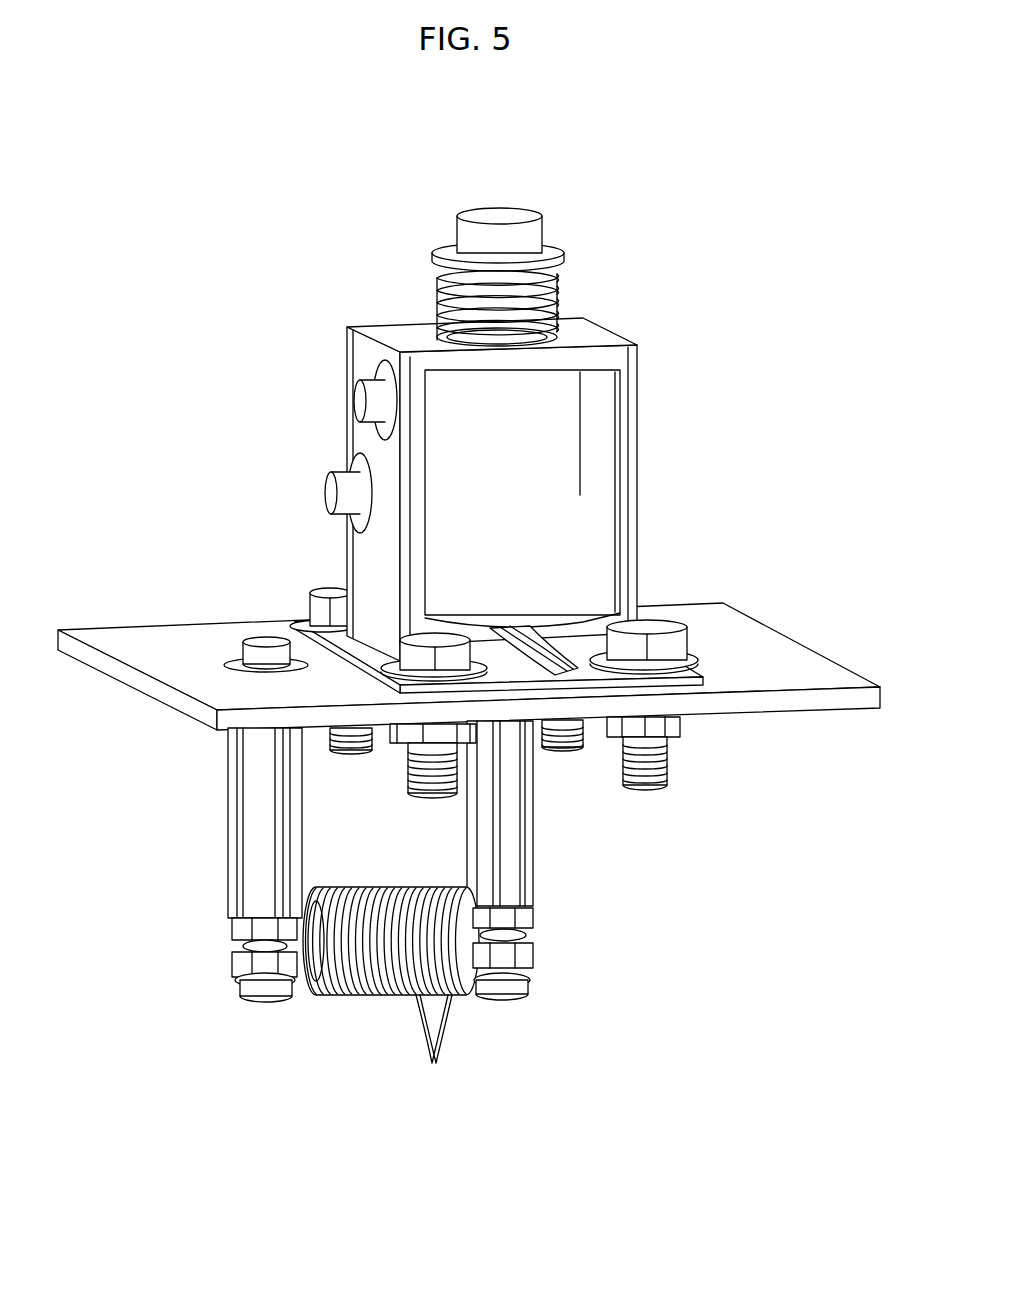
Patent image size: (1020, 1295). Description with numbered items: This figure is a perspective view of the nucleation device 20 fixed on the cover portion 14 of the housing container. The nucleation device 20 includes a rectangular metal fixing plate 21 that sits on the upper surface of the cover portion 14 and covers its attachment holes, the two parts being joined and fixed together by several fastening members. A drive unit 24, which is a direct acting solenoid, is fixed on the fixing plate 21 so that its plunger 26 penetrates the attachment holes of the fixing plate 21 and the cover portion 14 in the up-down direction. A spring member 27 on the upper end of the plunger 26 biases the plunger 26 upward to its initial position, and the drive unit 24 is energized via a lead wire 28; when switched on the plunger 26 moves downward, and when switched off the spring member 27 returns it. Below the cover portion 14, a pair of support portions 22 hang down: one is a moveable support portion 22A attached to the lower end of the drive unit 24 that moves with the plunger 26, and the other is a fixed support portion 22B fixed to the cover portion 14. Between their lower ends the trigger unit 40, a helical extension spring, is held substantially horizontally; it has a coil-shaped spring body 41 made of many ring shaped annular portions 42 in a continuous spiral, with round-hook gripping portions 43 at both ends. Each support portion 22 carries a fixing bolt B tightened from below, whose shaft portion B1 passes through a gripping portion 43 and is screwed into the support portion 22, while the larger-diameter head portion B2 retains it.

The cover portion 14 is at (762, 655).
The nucleation device 20 is at (541, 489).
The fixing plate 21 is at (588, 680).
The support portions 22 is at (421, 783).
The moveable support portion 22A is at (515, 862).
The fixed support portion 22B is at (268, 778).
The drive unit 24 is at (548, 514).
The plunger 26 is at (503, 243).
The spring member 27 is at (552, 300).
The lead wire 28 is at (573, 652).
The trigger unit 40 is at (391, 1000).
The spring body 41 is at (361, 1008).
The annular portions 42 is at (434, 1044).
The gripping portions 43 is at (405, 1034).
The fixing bolt B is at (273, 993).
The shaft portion B1 is at (530, 957).
The head portion B2 is at (503, 995).